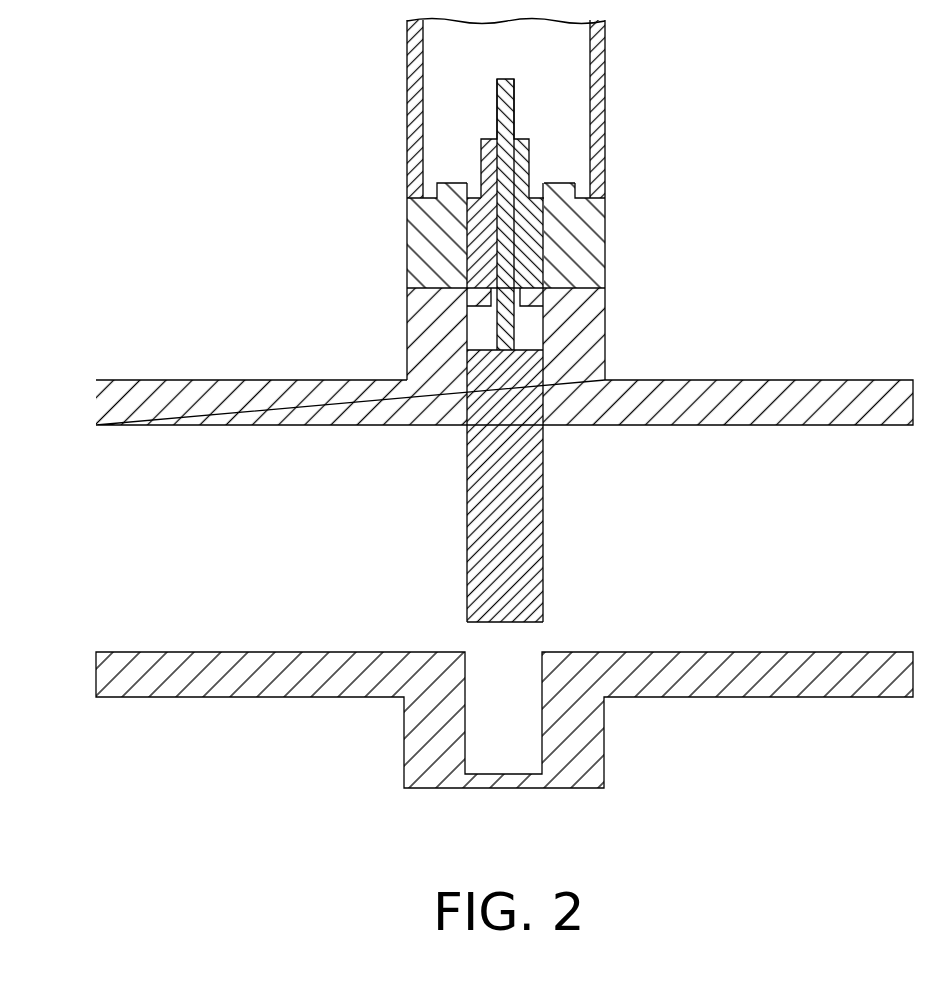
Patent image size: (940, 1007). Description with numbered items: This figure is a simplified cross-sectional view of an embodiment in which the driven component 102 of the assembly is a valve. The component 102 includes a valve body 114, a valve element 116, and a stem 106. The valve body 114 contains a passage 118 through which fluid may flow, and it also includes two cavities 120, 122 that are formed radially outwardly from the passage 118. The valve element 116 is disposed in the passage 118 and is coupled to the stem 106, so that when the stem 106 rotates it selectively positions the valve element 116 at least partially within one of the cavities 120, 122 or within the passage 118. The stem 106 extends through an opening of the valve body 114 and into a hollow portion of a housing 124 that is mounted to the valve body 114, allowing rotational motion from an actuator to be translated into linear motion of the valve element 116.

The component 102 is at (498, 404).
The stem 106 is at (503, 323).
The valve body 114 is at (750, 391).
The valve element 116 is at (478, 500).
The passage 118 is at (249, 540).
The cavity 120 is at (483, 333).
The cavity 122 is at (530, 740).
The housing 124 is at (599, 116).